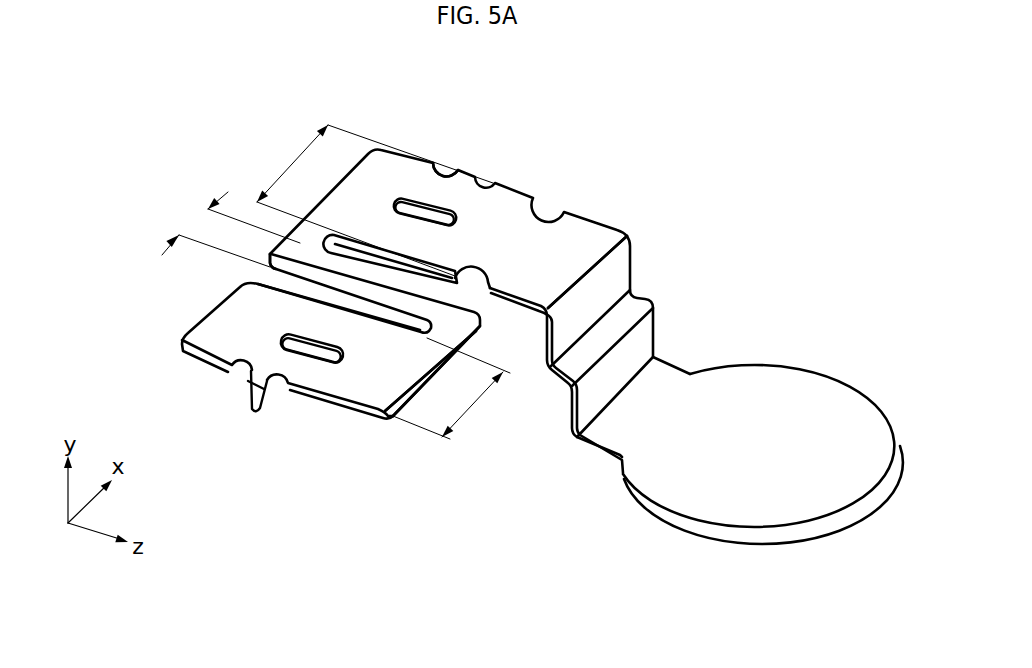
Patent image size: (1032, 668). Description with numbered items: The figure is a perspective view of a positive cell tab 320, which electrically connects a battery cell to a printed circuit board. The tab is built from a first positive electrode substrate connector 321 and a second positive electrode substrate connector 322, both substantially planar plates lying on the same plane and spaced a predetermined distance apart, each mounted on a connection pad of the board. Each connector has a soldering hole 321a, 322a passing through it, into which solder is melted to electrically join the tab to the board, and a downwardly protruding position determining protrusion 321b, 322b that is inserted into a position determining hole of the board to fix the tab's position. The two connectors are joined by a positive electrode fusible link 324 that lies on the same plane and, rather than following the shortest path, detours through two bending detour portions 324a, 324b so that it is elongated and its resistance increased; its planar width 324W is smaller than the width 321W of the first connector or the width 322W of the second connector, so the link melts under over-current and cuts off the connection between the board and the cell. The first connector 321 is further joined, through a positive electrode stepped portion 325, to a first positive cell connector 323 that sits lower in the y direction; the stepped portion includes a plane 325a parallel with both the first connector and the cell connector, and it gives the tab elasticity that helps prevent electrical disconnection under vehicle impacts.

The positive cell tab 320 is at (737, 133).
The first positive electrode substrate connector 321 is at (488, 223).
The soldering hole 321a is at (414, 200).
The position determining protrusion 321b is at (465, 170).
The width of the first positive electrode substrate connector 321W is at (366, 200).
The second positive electrode substrate connector 322 is at (360, 380).
The soldering hole 322a is at (300, 338).
The position determining protrusion 322b is at (253, 398).
The width of the second positive electrode substrate connector 322W is at (457, 388).
The first positive cell connector 323 is at (814, 392).
The positive electrode fusible link 324 is at (463, 317).
The bending detour portion 324a is at (268, 266).
The bending detour portion 324b is at (497, 290).
The planar width of the positive electrode fusible link 324W is at (220, 229).
The positive electrode stepped portion 325 is at (607, 380).
The plane of the stepped portion 325a is at (573, 362).